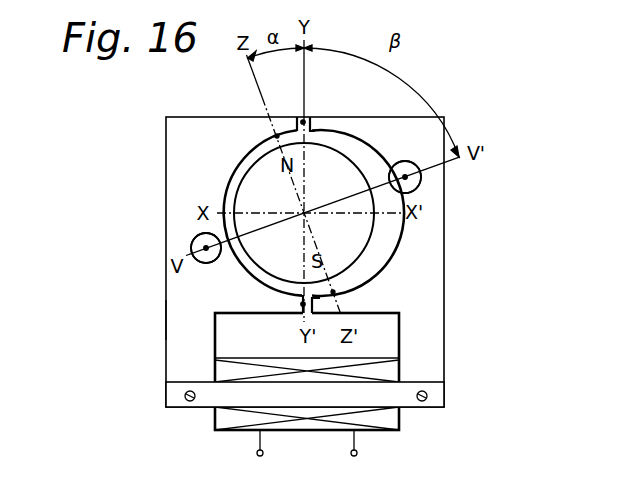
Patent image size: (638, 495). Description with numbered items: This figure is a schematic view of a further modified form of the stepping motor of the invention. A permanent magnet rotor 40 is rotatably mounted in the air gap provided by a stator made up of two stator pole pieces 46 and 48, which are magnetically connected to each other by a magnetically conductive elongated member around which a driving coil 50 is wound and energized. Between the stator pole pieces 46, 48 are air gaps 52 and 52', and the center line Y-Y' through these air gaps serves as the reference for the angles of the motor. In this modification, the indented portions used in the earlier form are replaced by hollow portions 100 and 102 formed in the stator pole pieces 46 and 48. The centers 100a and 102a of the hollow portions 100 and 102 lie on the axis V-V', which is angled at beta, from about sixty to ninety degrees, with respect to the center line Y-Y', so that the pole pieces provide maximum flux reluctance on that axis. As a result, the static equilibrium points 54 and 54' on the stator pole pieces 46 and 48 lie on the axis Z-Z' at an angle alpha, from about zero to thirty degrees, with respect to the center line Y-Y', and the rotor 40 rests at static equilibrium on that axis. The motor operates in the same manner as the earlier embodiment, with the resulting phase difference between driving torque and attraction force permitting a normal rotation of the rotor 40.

The permanent magnet rotor 40 is at (368, 236).
The stator pole piece 46 is at (181, 313).
The stator pole piece 48 is at (434, 287).
The driving coil 50 is at (400, 421).
The air gap 52 is at (322, 106).
The air gap 52' is at (269, 322).
The static equilibrium point 54 is at (243, 111).
The static equilibrium point 54' is at (406, 315).
The hollow portion 100 is at (191, 247).
The center of hollow portion 100a is at (196, 237).
The hollow portion 102 is at (417, 190).
The center of hollow portion 102a is at (412, 193).